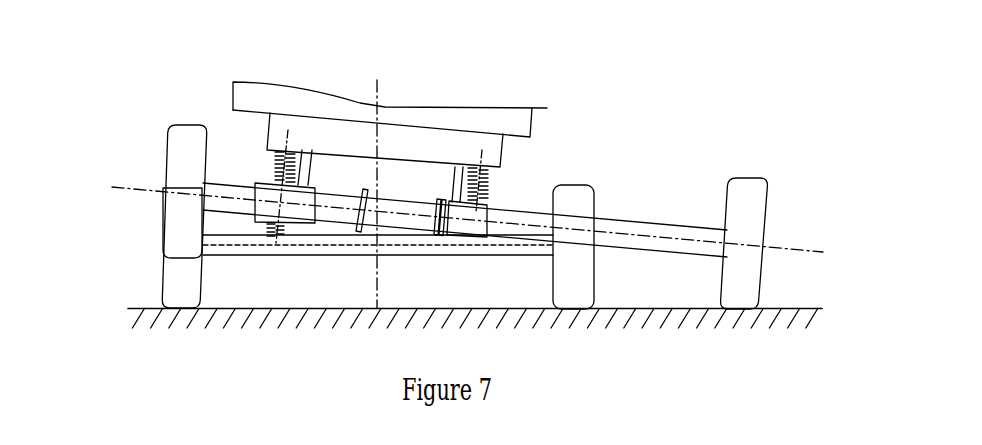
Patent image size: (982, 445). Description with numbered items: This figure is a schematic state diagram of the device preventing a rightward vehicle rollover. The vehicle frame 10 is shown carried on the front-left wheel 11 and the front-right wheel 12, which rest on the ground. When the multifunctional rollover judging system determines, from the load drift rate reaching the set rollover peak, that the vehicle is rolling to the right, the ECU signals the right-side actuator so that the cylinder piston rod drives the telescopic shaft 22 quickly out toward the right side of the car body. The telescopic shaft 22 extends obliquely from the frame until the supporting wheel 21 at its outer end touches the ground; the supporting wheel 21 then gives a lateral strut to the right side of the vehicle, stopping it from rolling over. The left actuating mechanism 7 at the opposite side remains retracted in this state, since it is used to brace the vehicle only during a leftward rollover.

The wheel 7 is at (180, 157).
The vehicle body 10 is at (313, 133).
The wheel hub 11 is at (170, 292).
The auxiliary wheel 12 is at (575, 197).
The steerable wheel 21 is at (753, 203).
The axle 22 is at (623, 232).